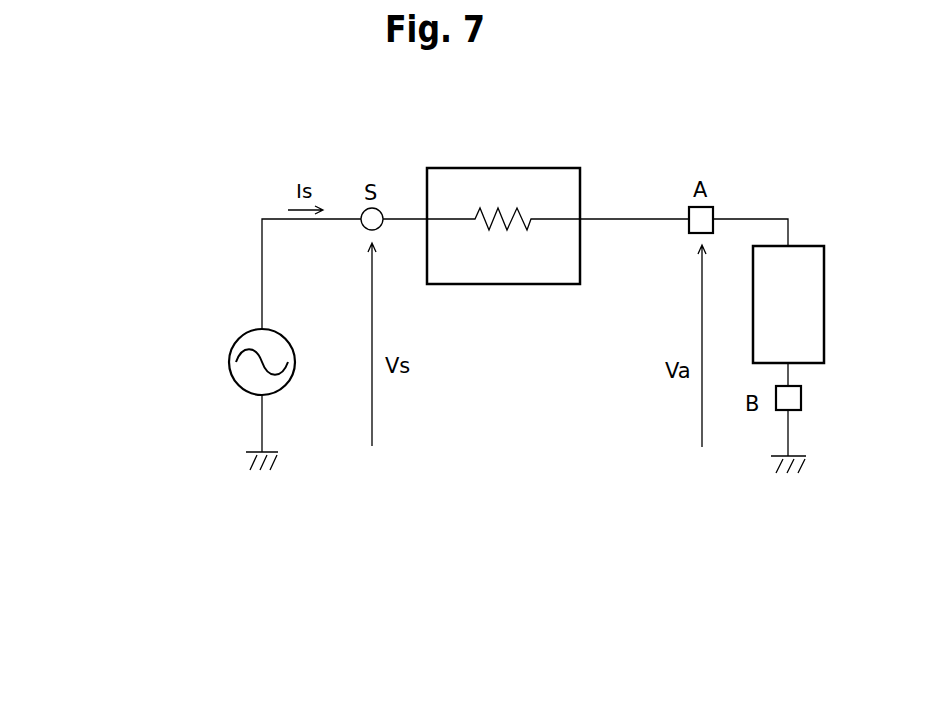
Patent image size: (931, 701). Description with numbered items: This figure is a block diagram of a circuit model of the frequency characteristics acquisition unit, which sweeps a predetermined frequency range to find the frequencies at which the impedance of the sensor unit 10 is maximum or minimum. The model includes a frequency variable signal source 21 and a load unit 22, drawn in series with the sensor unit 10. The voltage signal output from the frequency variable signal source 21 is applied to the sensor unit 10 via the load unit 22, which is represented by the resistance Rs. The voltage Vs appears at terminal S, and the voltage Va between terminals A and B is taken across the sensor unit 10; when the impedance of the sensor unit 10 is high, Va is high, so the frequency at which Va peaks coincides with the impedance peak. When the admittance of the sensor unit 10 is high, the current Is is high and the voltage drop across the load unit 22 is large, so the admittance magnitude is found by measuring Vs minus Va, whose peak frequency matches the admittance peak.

The frequency variable signal source 21 is at (238, 337).
The load unit 22 is at (555, 167).
The sensor unit 10 is at (808, 245).